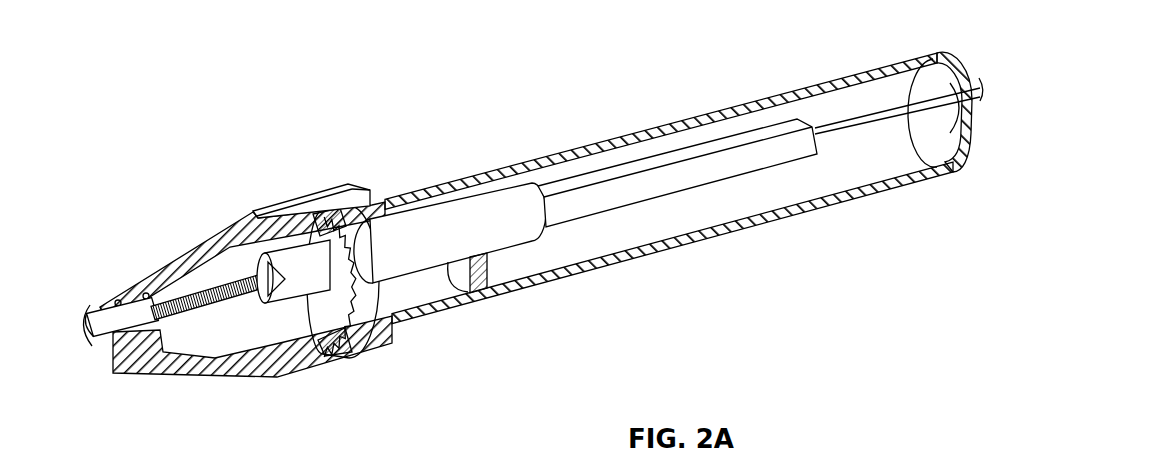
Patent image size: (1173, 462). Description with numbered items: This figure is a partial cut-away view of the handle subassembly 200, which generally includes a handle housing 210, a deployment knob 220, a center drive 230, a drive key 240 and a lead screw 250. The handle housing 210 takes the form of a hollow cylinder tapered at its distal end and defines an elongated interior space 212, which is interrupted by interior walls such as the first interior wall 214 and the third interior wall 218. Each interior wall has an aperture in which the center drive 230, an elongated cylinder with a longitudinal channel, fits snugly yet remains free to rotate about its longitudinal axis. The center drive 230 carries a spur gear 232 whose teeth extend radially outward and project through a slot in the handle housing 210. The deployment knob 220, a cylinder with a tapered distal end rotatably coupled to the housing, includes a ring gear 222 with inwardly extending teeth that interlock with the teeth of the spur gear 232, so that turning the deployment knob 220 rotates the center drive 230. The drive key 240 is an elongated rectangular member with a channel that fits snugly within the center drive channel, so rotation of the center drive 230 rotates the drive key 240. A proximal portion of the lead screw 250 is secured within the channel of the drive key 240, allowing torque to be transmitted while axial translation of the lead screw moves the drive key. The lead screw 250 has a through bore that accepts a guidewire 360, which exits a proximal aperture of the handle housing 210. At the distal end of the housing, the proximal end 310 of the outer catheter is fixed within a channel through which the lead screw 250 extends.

The handle subassembly 200 is at (172, 92).
The handle housing 210 is at (838, 77).
The elongated interior space 212 is at (843, 177).
The first interior wall 214 is at (497, 290).
The third interior wall 218 is at (337, 357).
The deployment knob 220 is at (240, 238).
The ring gear 222 is at (322, 200).
The center drive 230 is at (427, 225).
The spur gear 232 is at (388, 303).
The drive key 240 is at (680, 157).
The lead screw 250 is at (183, 303).
The proximal end of outer catheter 310 is at (102, 320).
The guidewire 360 is at (917, 107).